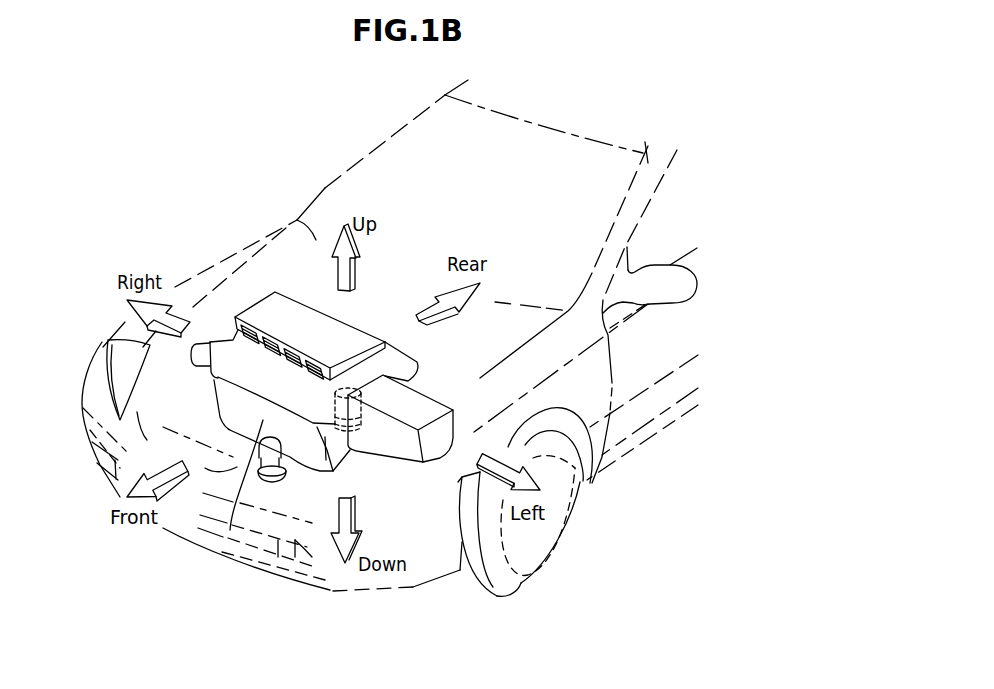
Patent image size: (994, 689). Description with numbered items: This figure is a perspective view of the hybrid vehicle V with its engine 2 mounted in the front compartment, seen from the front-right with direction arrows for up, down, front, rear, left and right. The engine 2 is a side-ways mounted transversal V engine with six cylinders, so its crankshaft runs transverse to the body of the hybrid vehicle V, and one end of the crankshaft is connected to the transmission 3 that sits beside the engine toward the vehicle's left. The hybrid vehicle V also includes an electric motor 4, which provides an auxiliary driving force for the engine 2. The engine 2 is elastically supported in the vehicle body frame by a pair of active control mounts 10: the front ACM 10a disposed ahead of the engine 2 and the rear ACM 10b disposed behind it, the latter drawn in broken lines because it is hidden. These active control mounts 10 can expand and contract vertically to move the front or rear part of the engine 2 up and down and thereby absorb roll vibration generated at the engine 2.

The hybrid vehicle V is at (573, 97).
The engine 2 is at (227, 402).
The transmission 3 is at (398, 463).
The electric motor 4 is at (379, 377).
The active control mount 10 is at (231, 510).
The front ACM 10a is at (258, 472).
The rear ACM 10b is at (337, 428).